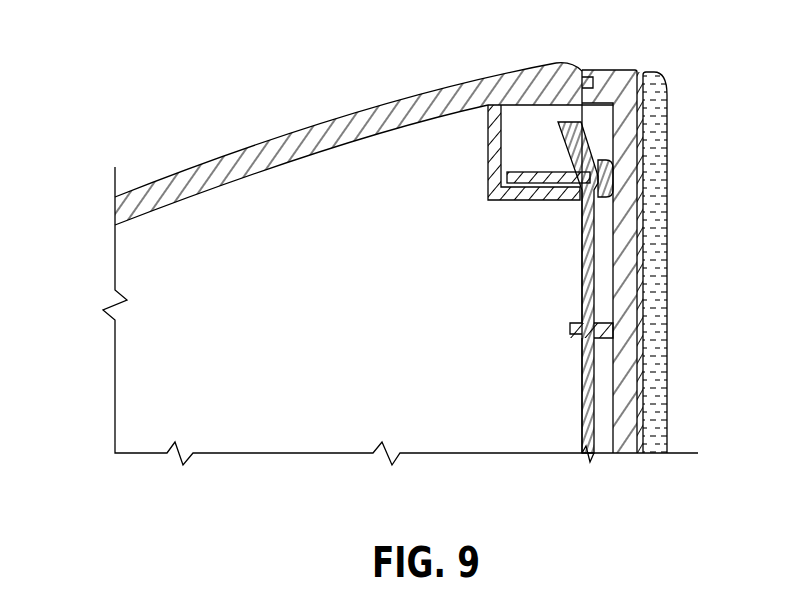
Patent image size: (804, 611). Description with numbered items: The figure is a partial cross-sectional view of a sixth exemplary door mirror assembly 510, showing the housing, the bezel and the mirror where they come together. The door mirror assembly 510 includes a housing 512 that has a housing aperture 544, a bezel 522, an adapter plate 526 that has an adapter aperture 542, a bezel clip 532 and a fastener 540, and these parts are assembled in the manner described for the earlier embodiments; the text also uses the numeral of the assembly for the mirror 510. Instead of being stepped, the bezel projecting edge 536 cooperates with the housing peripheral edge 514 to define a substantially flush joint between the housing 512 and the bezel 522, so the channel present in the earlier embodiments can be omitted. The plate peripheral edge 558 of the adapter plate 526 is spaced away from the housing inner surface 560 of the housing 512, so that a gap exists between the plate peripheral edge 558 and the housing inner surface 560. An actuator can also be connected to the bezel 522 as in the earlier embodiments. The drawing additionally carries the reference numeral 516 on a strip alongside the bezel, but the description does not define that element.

The door mirror assembly 510 is at (143, 117).
The housing 512 is at (290, 127).
The housing peripheral edge 514 is at (590, 110).
The cover strip 516 is at (667, 287).
The bezel 522 is at (670, 93).
The adapter plate 526 is at (582, 393).
The bezel clip 532 is at (570, 333).
The bezel projecting edge 536 is at (609, 70).
The fastener 540 is at (612, 183).
The adapter aperture 542 is at (600, 190).
The housing aperture 544 is at (547, 172).
The plate peripheral edge 558 is at (556, 98).
The housing inner surface 560 is at (200, 188).